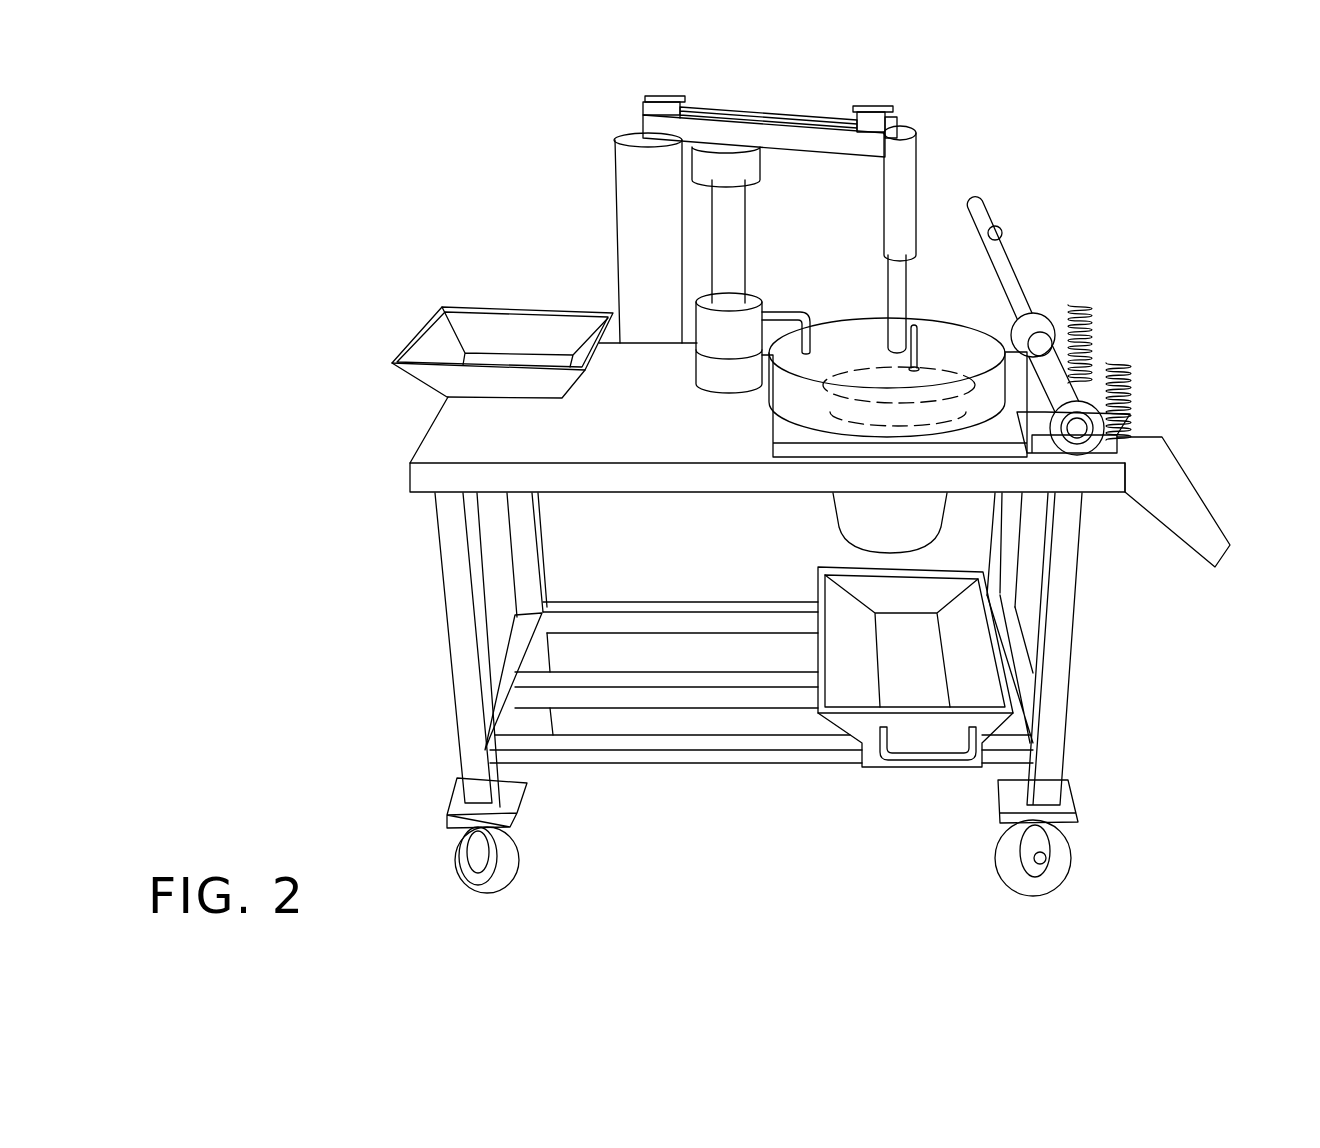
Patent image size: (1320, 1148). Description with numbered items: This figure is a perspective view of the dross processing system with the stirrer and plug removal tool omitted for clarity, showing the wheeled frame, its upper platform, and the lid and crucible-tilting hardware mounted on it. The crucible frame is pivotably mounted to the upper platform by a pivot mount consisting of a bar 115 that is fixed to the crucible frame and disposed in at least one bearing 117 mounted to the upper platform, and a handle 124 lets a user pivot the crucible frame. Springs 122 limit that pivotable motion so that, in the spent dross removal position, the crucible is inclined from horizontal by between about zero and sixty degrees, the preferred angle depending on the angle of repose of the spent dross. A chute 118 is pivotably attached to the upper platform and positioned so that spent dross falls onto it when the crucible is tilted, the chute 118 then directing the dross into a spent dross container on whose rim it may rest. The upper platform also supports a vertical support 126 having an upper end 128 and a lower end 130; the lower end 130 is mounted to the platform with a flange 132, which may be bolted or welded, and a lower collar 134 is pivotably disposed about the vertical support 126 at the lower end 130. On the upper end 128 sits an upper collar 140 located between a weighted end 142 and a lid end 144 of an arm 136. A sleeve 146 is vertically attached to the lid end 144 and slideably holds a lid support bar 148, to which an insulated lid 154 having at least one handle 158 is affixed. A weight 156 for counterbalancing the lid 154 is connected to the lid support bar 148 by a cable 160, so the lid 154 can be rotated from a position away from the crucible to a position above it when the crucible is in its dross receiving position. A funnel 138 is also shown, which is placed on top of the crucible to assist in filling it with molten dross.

The bar 115 is at (1065, 395).
The bearing 117 is at (1022, 322).
The chute 118 is at (1165, 482).
The springs 122 is at (1103, 301).
The handle 124 is at (985, 220).
The vertical support 126 is at (728, 225).
The upper end 128 is at (784, 170).
The lower end 130 is at (690, 410).
The flange 132 is at (717, 373).
The lower collar 134 is at (842, 393).
The arm 136 is at (842, 107).
The funnel 138 is at (418, 337).
The upper collar 140 is at (705, 168).
The weighted end 142 is at (645, 106).
The lid end 144 is at (914, 116).
The sleeve 146 is at (900, 173).
The lid support bar 148 is at (905, 290).
The insulated lid 154 is at (981, 366).
The weight 156 is at (630, 173).
The handle 158 is at (785, 318).
The cable 160 is at (768, 108).